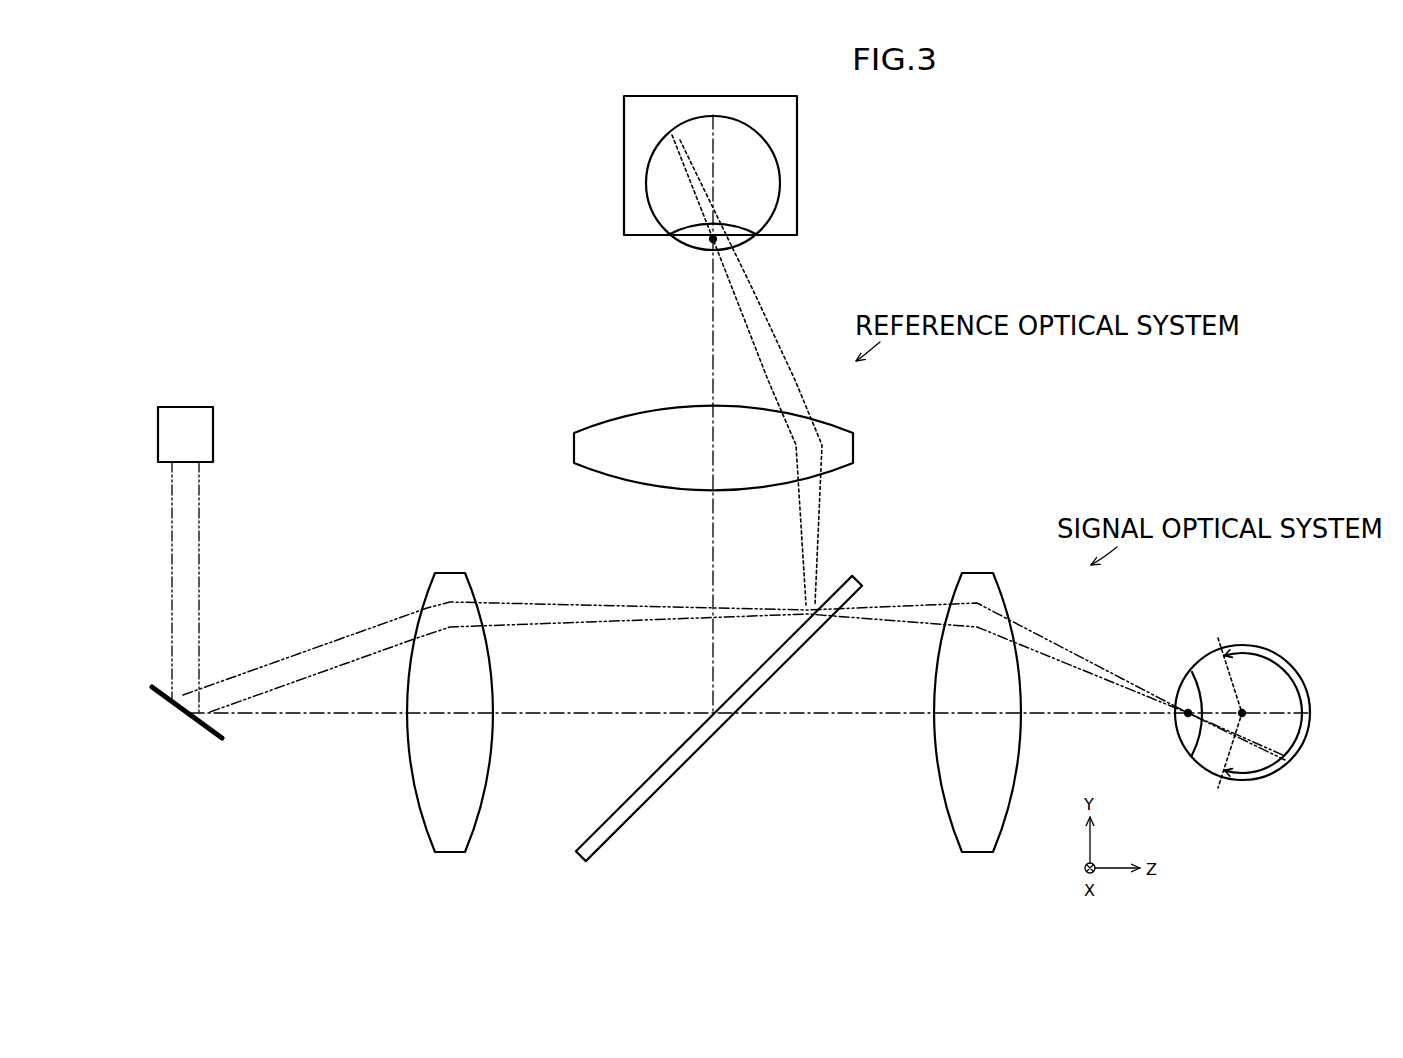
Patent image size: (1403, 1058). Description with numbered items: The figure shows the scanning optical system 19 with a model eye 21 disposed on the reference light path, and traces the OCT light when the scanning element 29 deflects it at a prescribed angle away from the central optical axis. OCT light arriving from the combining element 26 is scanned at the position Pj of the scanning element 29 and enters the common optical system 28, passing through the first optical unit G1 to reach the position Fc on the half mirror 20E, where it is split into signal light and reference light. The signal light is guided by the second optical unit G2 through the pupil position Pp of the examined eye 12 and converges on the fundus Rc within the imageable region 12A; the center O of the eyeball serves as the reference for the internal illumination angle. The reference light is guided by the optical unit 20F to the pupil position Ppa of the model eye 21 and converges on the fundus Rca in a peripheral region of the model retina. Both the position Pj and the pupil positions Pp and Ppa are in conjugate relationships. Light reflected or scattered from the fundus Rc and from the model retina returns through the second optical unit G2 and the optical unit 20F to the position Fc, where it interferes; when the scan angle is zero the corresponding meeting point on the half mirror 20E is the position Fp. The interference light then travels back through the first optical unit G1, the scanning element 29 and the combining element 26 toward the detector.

The scanning optical system 19 is at (368, 146).
The model eye 21 is at (797, 207).
The combining element 26 is at (213, 435).
The common optical system 28 is at (395, 534).
The scanning element 29 is at (210, 738).
The optical unit 20F is at (853, 442).
The half mirror 20E is at (855, 576).
The examined eye 12 is at (1307, 692).
The imageable region 12A is at (1298, 725).
The first optical unit G1 is at (447, 853).
The second optical unit G2 is at (978, 853).
The fundus Rca is at (680, 140).
The pupil position Ppa is at (733, 250).
The position Fc is at (797, 602).
The position Fp is at (711, 711).
The position Pj is at (180, 713).
The pupil position Pp is at (1186, 718).
The center of the eyeball O is at (1243, 710).
The fundus Rc is at (1290, 752).